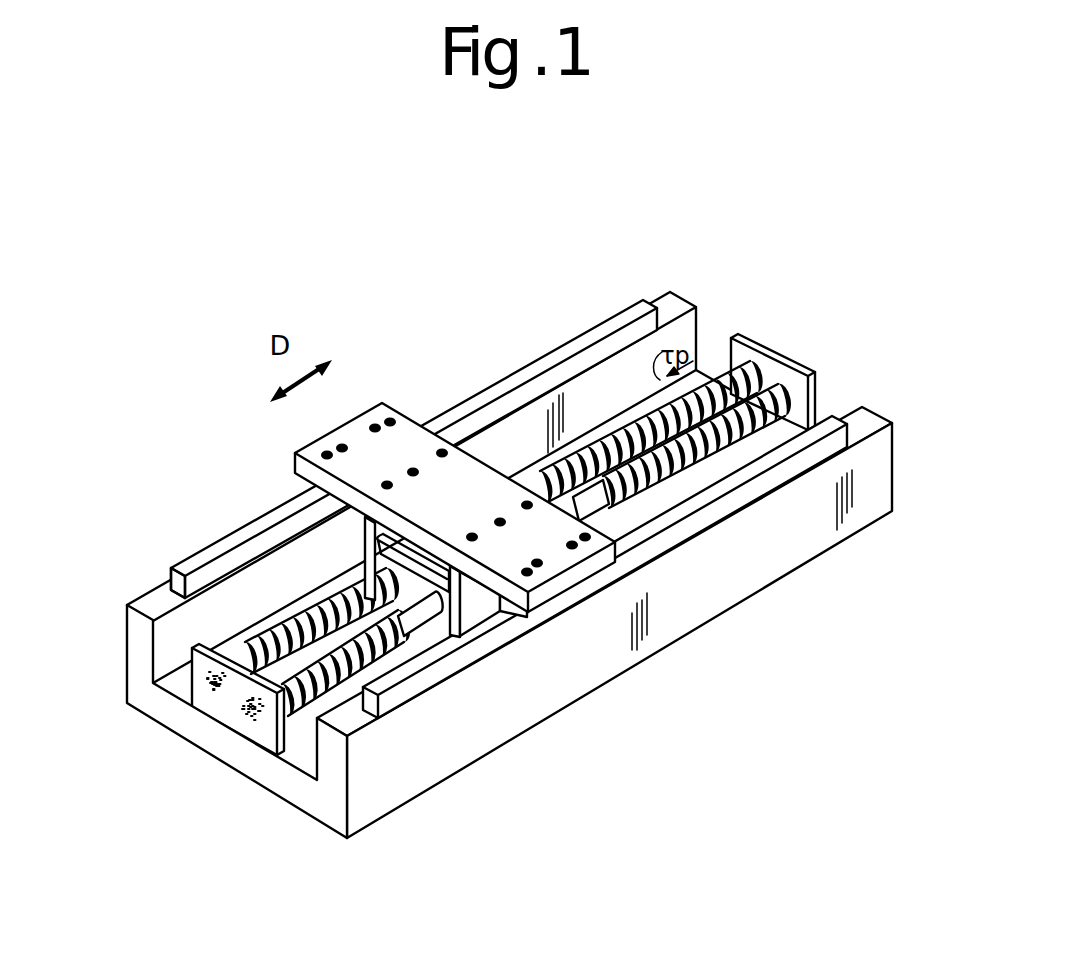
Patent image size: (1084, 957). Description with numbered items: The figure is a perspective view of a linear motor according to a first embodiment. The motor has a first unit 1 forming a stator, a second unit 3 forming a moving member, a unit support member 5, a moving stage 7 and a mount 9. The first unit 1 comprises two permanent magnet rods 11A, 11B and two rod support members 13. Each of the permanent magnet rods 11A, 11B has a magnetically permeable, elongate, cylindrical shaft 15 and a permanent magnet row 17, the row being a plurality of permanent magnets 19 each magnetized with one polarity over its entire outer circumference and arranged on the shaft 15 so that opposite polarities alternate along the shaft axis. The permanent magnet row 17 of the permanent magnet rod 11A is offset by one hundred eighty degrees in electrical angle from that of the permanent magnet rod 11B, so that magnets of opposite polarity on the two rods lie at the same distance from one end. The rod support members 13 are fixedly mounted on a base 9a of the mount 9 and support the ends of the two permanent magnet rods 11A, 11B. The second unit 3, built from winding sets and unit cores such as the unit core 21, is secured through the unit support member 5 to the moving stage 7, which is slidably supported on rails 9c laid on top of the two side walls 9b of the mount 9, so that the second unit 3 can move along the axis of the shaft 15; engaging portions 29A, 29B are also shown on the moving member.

The first unit 1 is at (502, 571).
The second unit 3 is at (439, 589).
The unit support member 5 is at (483, 600).
The moving stage 7 is at (463, 490).
The mount 9 is at (502, 571).
The base 9a is at (218, 742).
The side walls 9b is at (133, 642).
The rails 9c is at (193, 562).
The permanent magnet rod 11A is at (264, 616).
The permanent magnet rod 11B is at (345, 674).
The rod support members 13 is at (792, 360).
The shaft 15 is at (213, 693).
The permanent magnet row 17 is at (268, 628).
The permanent magnets 19 is at (747, 366).
The connecting plate 21 is at (392, 560).
The first engaging portion 29A is at (323, 600).
The second engaging portion 29B is at (517, 597).